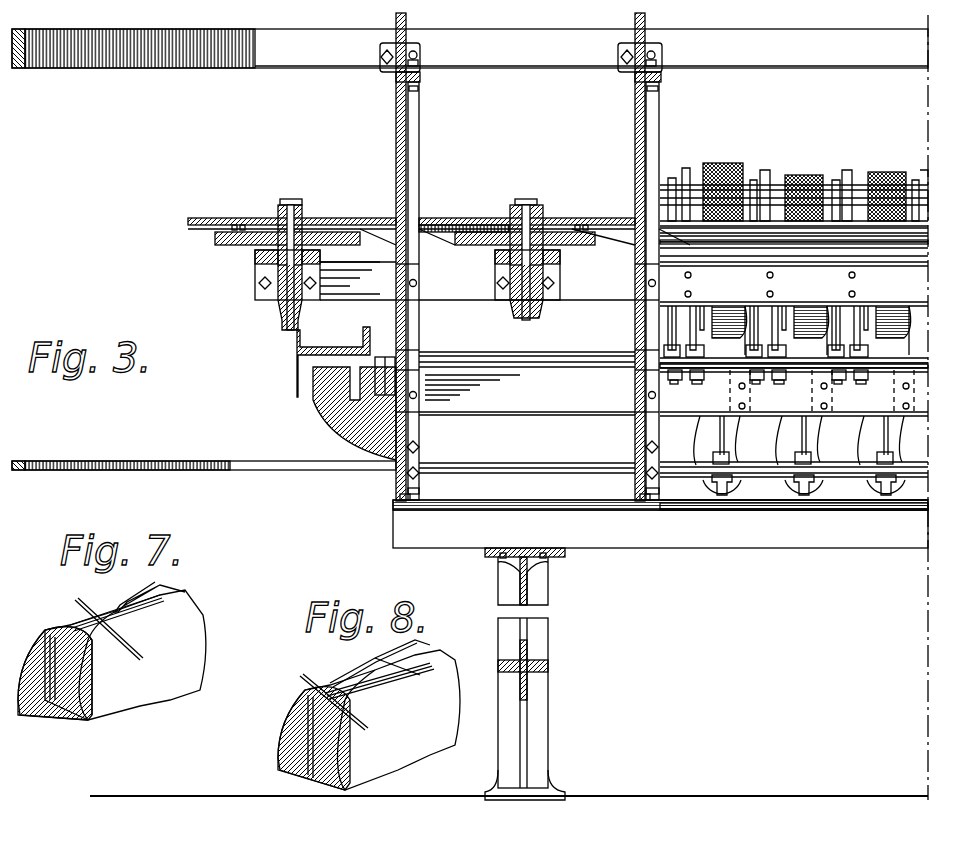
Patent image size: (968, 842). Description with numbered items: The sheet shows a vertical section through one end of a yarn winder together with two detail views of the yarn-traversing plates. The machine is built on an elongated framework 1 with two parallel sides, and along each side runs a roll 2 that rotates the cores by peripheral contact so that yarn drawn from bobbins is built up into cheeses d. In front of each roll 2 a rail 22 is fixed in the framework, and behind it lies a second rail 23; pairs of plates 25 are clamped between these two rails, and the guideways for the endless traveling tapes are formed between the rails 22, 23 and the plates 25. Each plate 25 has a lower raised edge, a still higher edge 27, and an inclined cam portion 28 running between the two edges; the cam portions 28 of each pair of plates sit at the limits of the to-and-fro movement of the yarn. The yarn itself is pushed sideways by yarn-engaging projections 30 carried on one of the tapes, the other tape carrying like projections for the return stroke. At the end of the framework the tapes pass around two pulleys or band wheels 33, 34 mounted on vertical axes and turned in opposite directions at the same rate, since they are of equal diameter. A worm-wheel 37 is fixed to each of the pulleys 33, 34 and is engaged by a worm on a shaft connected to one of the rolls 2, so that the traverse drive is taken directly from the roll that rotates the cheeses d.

In FIG. 3, the framework 1 is at (730, 545).
In FIG. 3, the roll 2 is at (915, 236).
In FIG. 3, the cheese d is at (875, 172).
In FIG. 3, the pulley 33 is at (218, 218).
In FIG. 3, the pulley 34 is at (460, 218).
In FIG. 3, the worm-wheel 37 is at (222, 246).
In FIG. 7, the rail 22 is at (113, 712).
In FIG. 8, the rail 22 is at (443, 712).
In FIG. 7, the rail 23 is at (32, 712).
In FIG. 7, the plate 25 is at (168, 605).
In FIG. 8, the edge 27 is at (420, 645).
In FIG. 8, the cam portion 28 is at (385, 672).
In FIG. 8, the yarn-engaging projection 30 is at (330, 682).